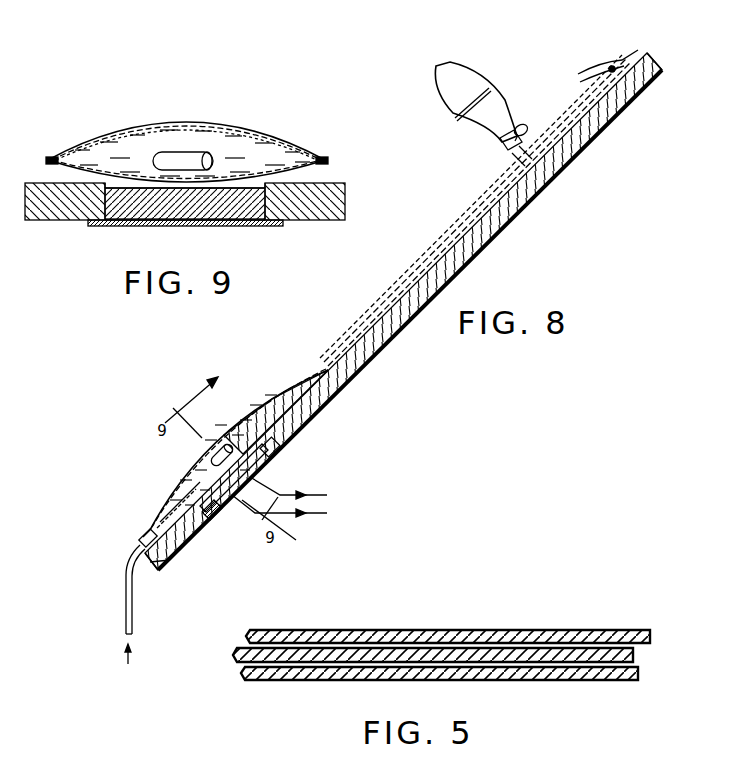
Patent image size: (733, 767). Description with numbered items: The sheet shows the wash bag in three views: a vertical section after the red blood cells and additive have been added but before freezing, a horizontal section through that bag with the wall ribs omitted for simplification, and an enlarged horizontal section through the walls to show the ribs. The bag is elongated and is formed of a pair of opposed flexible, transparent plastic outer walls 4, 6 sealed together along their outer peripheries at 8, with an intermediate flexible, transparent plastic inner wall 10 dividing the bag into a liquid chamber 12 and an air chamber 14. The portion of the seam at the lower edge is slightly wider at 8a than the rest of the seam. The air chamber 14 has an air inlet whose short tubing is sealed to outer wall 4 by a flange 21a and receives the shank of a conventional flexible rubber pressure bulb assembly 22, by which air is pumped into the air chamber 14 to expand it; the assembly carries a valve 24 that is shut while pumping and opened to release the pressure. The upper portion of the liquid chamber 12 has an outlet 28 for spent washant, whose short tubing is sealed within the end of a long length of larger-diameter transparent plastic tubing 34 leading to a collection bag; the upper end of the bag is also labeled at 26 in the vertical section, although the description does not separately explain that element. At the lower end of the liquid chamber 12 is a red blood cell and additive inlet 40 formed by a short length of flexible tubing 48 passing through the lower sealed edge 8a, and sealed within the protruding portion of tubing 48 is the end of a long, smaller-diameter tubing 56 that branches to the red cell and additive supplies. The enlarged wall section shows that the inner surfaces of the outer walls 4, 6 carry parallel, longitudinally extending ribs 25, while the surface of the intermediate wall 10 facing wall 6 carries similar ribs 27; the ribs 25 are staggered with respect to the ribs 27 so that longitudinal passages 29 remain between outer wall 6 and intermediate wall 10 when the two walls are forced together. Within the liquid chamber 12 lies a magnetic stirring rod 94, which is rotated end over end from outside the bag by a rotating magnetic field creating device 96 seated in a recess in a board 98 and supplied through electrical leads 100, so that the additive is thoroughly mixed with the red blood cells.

In FIG. 9, the outer wall 4 is at (100, 138).
In FIG. 8, the outer wall 4 is at (365, 320).
In FIG. 5, the outer wall 4 is at (522, 640).
In FIG. 9, the outer wall 6 is at (68, 205).
In FIG. 8, the outer wall 6 is at (288, 388).
In FIG. 5, the outer wall 6 is at (555, 674).
In FIG. 9, the sealed outer periphery 8 is at (52, 156).
In FIG. 8, the lower sealed edge 8a is at (147, 522).
In FIG. 9, the intermediate inner wall 10 is at (140, 124).
In FIG. 8, the intermediate inner wall 10 is at (380, 292).
In FIG. 5, the intermediate inner wall 10 is at (486, 652).
In FIG. 8, the liquid chamber 12 is at (180, 490).
In FIG. 5, the liquid chamber 12 is at (560, 678).
In FIG. 8, the air chamber 14 is at (190, 466).
In FIG. 5, the air chamber 14 is at (392, 638).
In FIG. 8, the flange 21a is at (516, 156).
In FIG. 8, the pressure bulb assembly 22 is at (470, 82).
In FIG. 8, the valve 24 is at (524, 124).
In FIG. 5, the ribs 25 is at (342, 632).
In FIG. 8, the strip end 26 is at (641, 52).
In FIG. 5, the ribs 27 is at (420, 636).
In FIG. 8, the outlet 28 is at (622, 85).
In FIG. 5, the longitudinal passages 29 is at (310, 673).
In FIG. 8, the tubing 34 is at (610, 68).
In FIG. 8, the red blood cell and additive inlet 40 is at (178, 541).
In FIG. 8, the tubing 48 is at (140, 536).
In FIG. 8, the tubing 56 is at (133, 618).
In FIG. 9, the magnetic stirring rod 94 is at (186, 152).
In FIG. 8, the magnetic stirring rod 94 is at (228, 446).
In FIG. 9, the rotating magnetic field creating device 96 is at (118, 222).
In FIG. 8, the rotating magnetic field creating device 96 is at (280, 447).
In FIG. 9, the board 98 is at (316, 212).
In FIG. 8, the board 98 is at (475, 247).
In FIG. 8, the electrical leads 100 is at (298, 493).